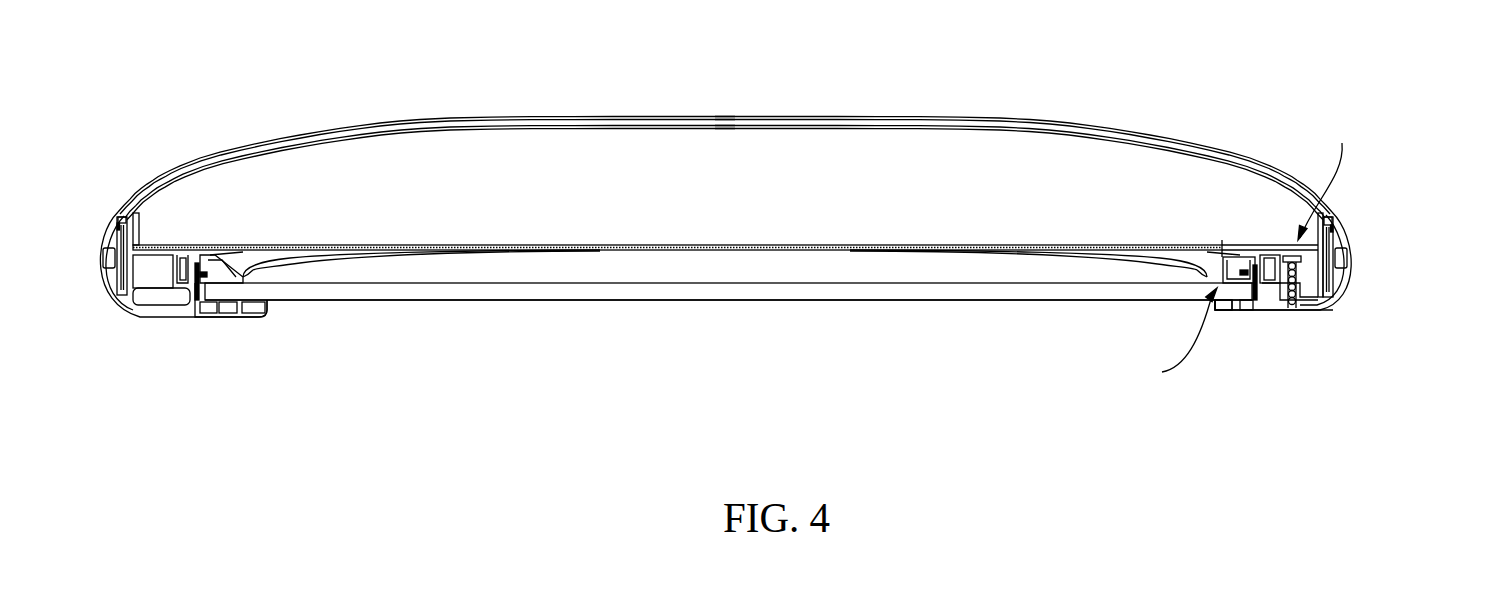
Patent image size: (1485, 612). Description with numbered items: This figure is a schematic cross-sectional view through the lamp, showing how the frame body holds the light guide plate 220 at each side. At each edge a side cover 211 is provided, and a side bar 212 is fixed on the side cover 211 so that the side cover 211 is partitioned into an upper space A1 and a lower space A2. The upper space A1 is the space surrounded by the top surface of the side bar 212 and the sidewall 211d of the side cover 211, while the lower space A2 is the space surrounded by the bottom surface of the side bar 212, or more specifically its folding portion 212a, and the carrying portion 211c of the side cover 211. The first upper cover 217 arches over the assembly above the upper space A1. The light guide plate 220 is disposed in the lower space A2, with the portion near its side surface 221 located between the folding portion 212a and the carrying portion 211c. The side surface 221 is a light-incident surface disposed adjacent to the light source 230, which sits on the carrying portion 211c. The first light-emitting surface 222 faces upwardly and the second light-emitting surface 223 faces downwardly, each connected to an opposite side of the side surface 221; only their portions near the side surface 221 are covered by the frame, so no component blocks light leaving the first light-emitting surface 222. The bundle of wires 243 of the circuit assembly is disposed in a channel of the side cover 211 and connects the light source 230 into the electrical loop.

The side cover 211 is at (1362, 300).
The carrying portion 211c is at (1220, 305).
The sidewall 211d is at (1347, 223).
The side bar 212 is at (1282, 247).
The folding portion 212a is at (1220, 247).
The first upper cover 217 is at (875, 123).
The light guide plate 220 is at (955, 292).
The side surface 221 is at (1243, 300).
The first light-emitting surface 222 is at (813, 285).
The second light-emitting surface 223 is at (813, 298).
The light source 230 is at (1260, 293).
The bundle of wires 243 is at (1297, 302).
The upper space A1 is at (1328, 177).
The lower space A2 is at (1167, 340).